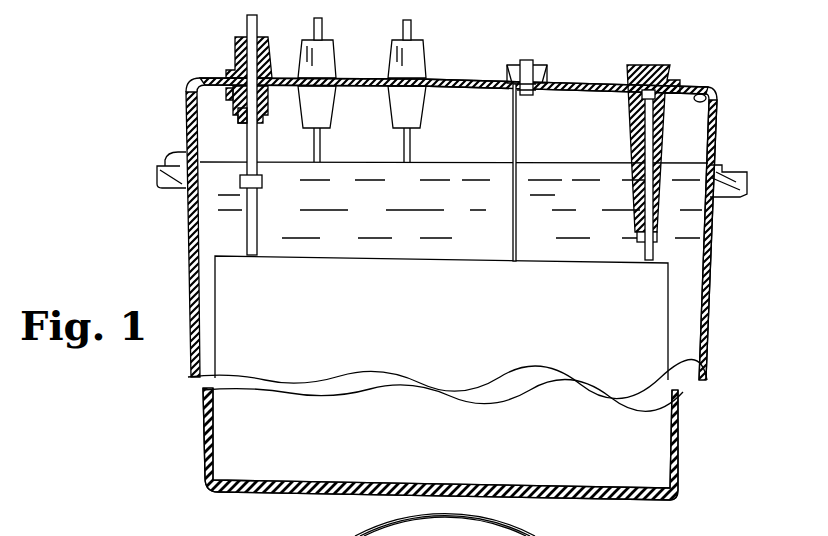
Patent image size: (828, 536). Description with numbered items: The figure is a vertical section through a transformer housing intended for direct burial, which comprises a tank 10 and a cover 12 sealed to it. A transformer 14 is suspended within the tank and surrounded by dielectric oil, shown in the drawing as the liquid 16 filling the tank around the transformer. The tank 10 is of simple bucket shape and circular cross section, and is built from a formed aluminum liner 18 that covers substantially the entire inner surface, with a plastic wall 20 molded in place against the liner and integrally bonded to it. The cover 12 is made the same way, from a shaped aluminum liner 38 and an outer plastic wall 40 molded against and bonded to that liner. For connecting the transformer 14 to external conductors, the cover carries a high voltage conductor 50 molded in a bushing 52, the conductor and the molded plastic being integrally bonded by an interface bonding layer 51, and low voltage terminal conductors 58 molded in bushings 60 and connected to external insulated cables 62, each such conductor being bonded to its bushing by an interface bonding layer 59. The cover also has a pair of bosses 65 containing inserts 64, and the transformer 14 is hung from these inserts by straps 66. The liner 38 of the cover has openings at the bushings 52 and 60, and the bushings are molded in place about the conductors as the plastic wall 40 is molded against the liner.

The tank 10 is at (724, 338).
The cover 12 is at (720, 118).
The transformer 14 is at (444, 327).
The electrolyte / liquid 16 is at (484, 248).
The aluminum liner 18 is at (708, 278).
The plastic wall 20 is at (705, 366).
The aluminum liner 38 is at (712, 102).
The plastic wall 40 is at (718, 152).
The high voltage conductor 50 is at (646, 144).
The interface bonding layer 51 is at (650, 168).
The bushing 52 is at (647, 67).
The low voltage terminal conductor 58 is at (247, 110).
The interface bonding layer 59 is at (228, 102).
The bushing 60 is at (240, 54).
The external insulated cable 62 is at (257, 20).
The insert 64 is at (526, 58).
The boss 65 is at (542, 72).
The strap 66 is at (512, 147).